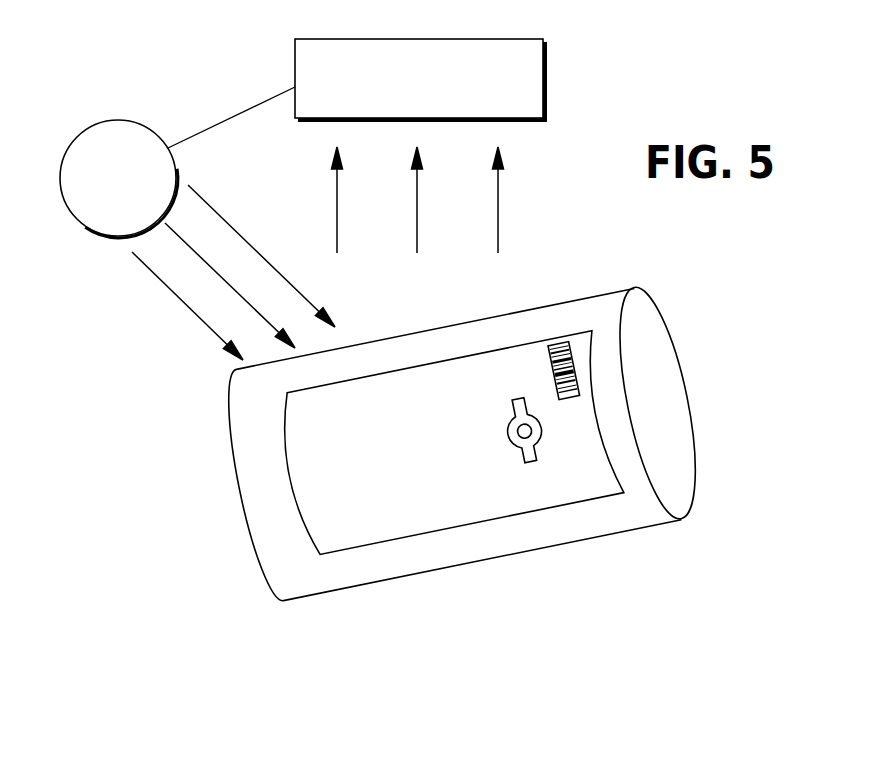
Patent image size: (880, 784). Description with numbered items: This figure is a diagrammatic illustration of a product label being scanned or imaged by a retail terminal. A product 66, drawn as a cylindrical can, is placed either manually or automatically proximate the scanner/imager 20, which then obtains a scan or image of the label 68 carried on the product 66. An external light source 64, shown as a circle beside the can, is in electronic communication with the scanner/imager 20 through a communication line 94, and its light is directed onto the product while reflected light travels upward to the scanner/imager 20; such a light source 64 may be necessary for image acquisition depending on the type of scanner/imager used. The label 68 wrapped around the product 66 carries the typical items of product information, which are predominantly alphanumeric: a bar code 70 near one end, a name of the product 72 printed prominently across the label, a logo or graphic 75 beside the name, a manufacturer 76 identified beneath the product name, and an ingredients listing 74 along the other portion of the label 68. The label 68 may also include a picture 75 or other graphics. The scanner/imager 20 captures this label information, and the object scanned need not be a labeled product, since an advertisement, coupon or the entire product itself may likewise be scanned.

The scanner/imager 20 is at (430, 39).
The external light source 64 is at (90, 122).
The communication line 94 is at (243, 108).
The product 66 is at (221, 551).
The label 68 is at (575, 500).
The bar code 70 is at (578, 358).
The name of the product 72 is at (463, 373).
The ingredients listing 74 is at (330, 423).
The logo or graphic 75 is at (518, 395).
The manufacturer 76 is at (423, 387).